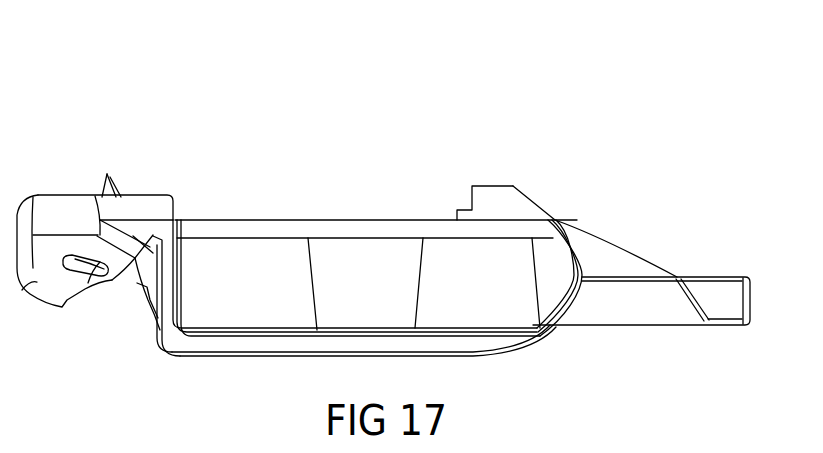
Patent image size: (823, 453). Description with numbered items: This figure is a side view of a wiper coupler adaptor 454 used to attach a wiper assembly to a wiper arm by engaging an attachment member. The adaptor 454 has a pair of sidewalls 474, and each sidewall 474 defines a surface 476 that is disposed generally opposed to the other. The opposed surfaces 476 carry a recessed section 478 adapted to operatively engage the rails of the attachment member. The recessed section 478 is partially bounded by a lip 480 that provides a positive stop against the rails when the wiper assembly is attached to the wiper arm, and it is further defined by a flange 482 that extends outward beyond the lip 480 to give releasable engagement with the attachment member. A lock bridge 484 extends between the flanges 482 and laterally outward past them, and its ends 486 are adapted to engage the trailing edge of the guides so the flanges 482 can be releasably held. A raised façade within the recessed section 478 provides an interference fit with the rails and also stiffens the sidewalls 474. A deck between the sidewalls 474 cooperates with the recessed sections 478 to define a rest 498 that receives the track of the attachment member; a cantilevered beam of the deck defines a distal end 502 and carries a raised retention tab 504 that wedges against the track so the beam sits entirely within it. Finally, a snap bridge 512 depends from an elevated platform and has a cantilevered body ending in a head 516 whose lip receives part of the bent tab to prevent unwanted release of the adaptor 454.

The wiper coupler adaptor 454 is at (170, 102).
The sidewall 474 is at (150, 318).
The opposed surface 476 is at (123, 283).
The recessed section 478 is at (392, 313).
The lip 480 is at (345, 320).
The flange 482 is at (633, 306).
The lock bridge 484 is at (750, 299).
The end 486 is at (723, 305).
The rest 498 is at (272, 218).
The distal end 502 is at (517, 190).
The retention tab 504 is at (495, 185).
The snap bridge 512 is at (109, 174).
The head 516 is at (123, 187).